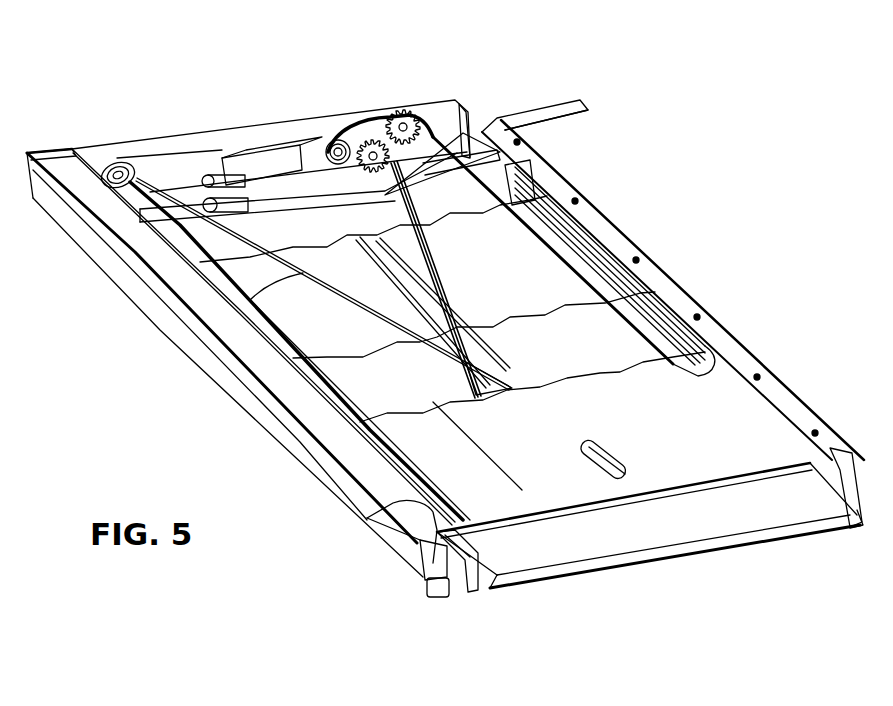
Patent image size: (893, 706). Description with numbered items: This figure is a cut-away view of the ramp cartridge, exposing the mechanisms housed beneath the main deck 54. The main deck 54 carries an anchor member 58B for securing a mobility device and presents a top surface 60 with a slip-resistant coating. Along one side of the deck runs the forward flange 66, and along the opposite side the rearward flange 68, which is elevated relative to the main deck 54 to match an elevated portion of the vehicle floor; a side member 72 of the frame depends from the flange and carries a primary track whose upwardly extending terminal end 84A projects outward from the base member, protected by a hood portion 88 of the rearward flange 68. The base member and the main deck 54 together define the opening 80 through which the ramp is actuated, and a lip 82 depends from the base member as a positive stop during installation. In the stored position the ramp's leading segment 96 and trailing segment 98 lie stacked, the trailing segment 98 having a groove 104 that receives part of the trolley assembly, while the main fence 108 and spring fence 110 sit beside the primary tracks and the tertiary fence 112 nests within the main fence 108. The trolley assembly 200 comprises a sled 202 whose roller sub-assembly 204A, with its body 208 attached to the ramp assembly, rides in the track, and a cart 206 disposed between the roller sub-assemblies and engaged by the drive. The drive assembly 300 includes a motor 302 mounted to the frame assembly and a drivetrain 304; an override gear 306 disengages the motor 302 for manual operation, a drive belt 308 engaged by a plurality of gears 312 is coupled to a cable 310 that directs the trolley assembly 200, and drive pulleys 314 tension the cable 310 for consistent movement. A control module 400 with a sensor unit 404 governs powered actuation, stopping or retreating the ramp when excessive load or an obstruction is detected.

The main deck 54 is at (360, 432).
The anchor member 58B is at (623, 453).
The top surface 60 is at (753, 430).
The forward flange 66 is at (740, 362).
The rearward flange 68 is at (288, 381).
The side member 72 is at (173, 316).
The opening 80 is at (601, 522).
The lip 82 is at (433, 598).
The upwardly extending terminal end 84A is at (420, 573).
The hood portion 88 is at (367, 518).
The leading segment 96 is at (767, 508).
The trailing segment 98 is at (645, 280).
The groove 104 is at (413, 268).
The main fence 108 is at (187, 247).
The spring fence 110 is at (685, 306).
The tertiary fence 112 is at (460, 588).
The trolley assembly 200 is at (496, 104).
The sled 202 is at (430, 99).
The roller sub-assembly 204A is at (515, 134).
The cart 206 is at (116, 163).
The body 208 is at (467, 110).
The drive assembly 300 is at (228, 128).
The motor 302 is at (318, 132).
The drivetrain 304 is at (390, 108).
The override gear 306 is at (330, 152).
The drive belt 308 is at (597, 227).
The cable 310 is at (213, 362).
The gears 312 is at (347, 147).
The drive pulleys 314 is at (105, 165).
The control module 400 is at (262, 138).
The sensor unit 404 is at (212, 172).